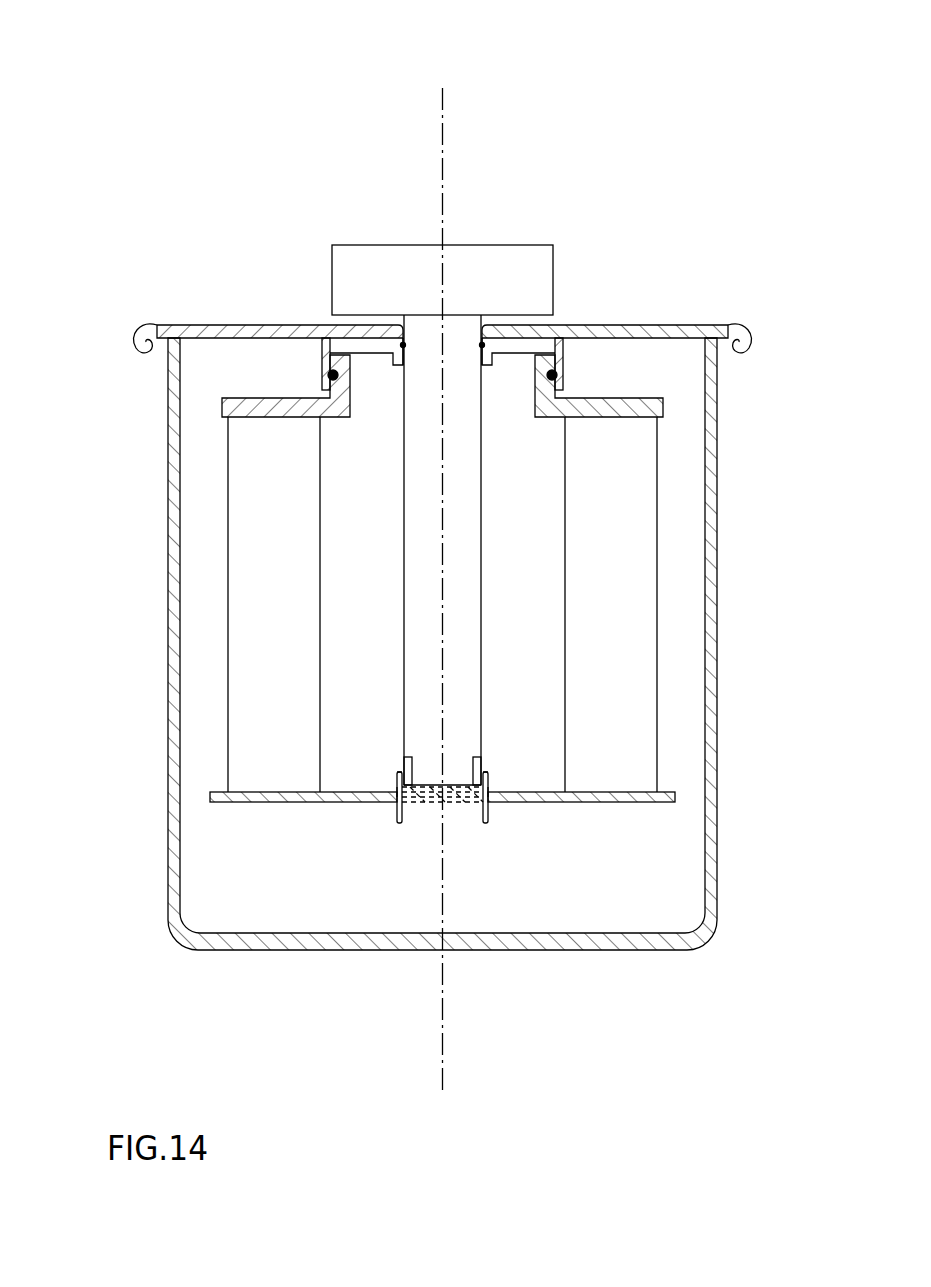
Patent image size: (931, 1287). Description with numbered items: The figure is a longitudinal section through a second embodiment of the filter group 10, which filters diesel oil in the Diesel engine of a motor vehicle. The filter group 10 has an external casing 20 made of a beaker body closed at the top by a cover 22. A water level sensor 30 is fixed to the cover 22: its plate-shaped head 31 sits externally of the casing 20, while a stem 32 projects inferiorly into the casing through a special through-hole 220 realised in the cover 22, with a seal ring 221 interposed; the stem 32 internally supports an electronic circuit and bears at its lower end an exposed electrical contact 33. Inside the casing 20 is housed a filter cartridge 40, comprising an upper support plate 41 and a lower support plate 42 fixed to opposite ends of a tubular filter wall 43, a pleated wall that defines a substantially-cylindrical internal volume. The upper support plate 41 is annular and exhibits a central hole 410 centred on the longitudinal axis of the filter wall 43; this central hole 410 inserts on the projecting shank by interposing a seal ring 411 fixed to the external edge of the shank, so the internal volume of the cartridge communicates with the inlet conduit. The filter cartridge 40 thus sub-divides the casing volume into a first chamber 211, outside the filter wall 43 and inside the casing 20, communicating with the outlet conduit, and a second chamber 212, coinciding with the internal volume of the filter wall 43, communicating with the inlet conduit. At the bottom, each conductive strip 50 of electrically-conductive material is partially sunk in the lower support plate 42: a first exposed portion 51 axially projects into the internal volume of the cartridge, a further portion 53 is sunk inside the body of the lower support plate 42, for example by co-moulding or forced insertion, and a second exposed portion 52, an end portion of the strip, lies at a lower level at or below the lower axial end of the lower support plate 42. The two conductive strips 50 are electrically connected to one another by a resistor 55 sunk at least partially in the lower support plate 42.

The filter group 10 is at (147, 115).
The external casing 20 is at (153, 527).
The first chamber 211 is at (677, 582).
The second chamber 212 is at (547, 550).
The cover 22 is at (650, 326).
The through-hole 220 is at (482, 345).
The seal ring 221 is at (405, 344).
The water level sensor 30 is at (507, 237).
The plate-shaped head 31 is at (537, 262).
The stem 32 is at (463, 570).
The exposed electrical contact 33 is at (403, 763).
The filter cartridge 40 is at (220, 630).
The upper support plate 41 is at (278, 397).
The central hole 410 is at (331, 388).
The seal ring 411 is at (330, 376).
The lower support plate 42 is at (247, 801).
The tubular filter wall 43 is at (247, 478).
The conductive strip 50 is at (390, 813).
The first exposed portion 51 is at (400, 772).
The second exposed portion 52 is at (400, 825).
The further portion 53 is at (397, 787).
The resistor 55 is at (452, 807).